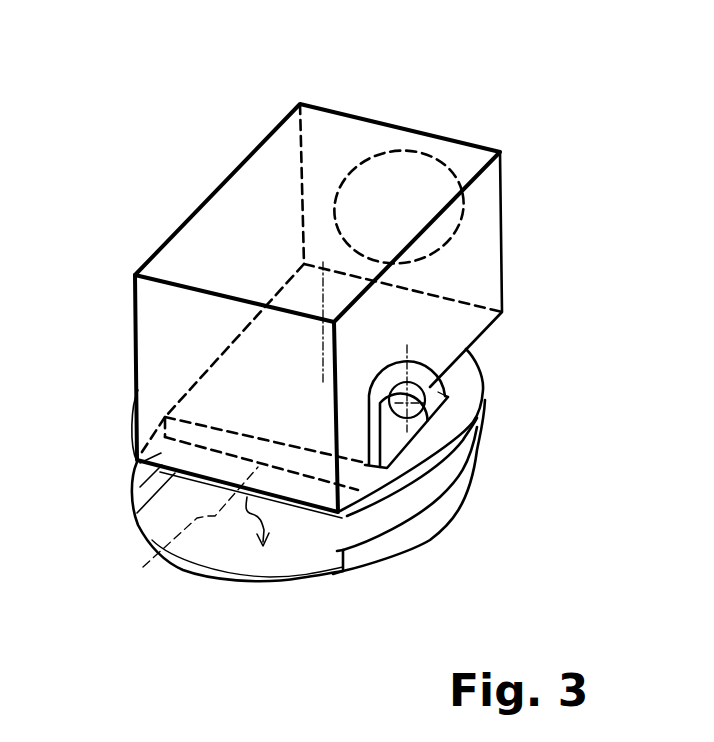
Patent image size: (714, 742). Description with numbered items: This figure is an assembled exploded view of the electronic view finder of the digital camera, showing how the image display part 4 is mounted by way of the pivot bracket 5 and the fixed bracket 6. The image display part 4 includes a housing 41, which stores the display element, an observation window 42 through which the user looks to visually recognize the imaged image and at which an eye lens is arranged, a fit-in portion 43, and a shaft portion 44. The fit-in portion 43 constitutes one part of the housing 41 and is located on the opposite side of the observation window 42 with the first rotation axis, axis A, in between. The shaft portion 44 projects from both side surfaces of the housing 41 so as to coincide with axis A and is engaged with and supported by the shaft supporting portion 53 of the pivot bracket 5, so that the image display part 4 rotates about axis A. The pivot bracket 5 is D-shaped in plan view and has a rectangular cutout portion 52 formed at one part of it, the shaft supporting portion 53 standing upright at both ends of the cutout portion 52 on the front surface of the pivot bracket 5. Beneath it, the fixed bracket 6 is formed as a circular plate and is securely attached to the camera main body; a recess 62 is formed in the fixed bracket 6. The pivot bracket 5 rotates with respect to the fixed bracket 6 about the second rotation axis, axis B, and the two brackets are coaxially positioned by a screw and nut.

The image display part 4 is at (500, 105).
The housing 41 is at (277, 171).
The observation window 42 is at (403, 175).
The fit-in portion 43 is at (140, 463).
The shaft portion 44 is at (422, 375).
The pivot bracket 5 is at (450, 394).
The shaft supporting portion 53 is at (418, 383).
The fixed bracket 6 is at (407, 512).
The recess 62 is at (273, 562).
The cutout portion 52 is at (198, 531).